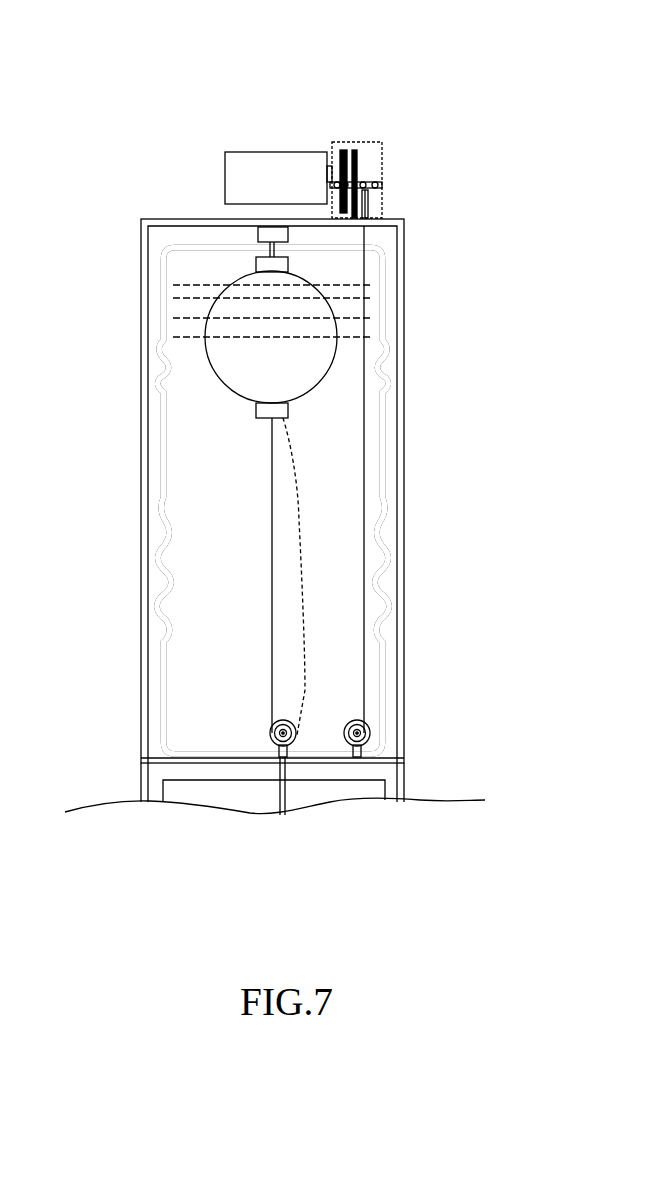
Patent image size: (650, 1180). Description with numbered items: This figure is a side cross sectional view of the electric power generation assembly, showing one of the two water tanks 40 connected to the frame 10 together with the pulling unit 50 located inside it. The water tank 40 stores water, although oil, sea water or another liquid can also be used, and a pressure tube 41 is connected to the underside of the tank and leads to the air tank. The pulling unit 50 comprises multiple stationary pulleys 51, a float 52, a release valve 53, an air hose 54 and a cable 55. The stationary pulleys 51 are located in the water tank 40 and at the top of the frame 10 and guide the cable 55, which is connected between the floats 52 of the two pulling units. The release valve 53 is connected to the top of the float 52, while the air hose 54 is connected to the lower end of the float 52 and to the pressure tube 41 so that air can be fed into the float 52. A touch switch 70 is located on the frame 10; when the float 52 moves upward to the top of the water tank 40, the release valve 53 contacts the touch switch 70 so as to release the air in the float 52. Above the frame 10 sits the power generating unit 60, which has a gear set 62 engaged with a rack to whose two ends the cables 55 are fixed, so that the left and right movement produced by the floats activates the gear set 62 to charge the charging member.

The frame 10 is at (403, 693).
The water tank 40 is at (383, 500).
The pressure tube 41 is at (283, 787).
The pulling unit 50 is at (264, 453).
The stationary pulley 51 is at (270, 732).
The float 52 is at (222, 382).
The release valve 53 is at (258, 242).
The air hose 54 is at (295, 460).
The cable 55 is at (273, 578).
The power generating unit 60 is at (324, 113).
The gear set 62 is at (357, 148).
The touch switch 70 is at (260, 232).